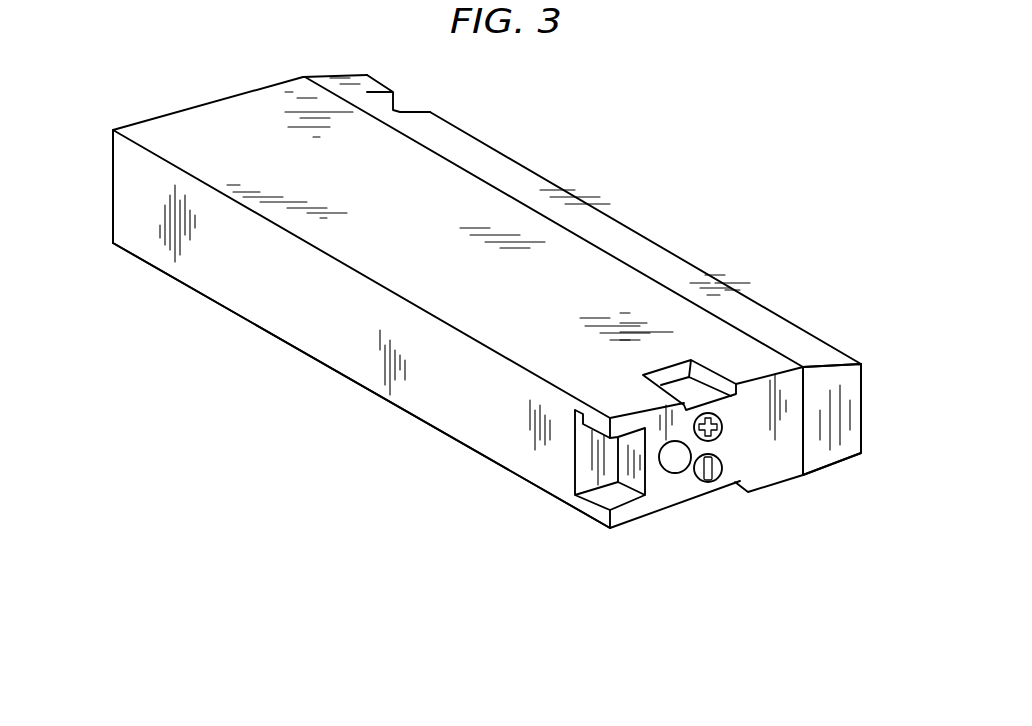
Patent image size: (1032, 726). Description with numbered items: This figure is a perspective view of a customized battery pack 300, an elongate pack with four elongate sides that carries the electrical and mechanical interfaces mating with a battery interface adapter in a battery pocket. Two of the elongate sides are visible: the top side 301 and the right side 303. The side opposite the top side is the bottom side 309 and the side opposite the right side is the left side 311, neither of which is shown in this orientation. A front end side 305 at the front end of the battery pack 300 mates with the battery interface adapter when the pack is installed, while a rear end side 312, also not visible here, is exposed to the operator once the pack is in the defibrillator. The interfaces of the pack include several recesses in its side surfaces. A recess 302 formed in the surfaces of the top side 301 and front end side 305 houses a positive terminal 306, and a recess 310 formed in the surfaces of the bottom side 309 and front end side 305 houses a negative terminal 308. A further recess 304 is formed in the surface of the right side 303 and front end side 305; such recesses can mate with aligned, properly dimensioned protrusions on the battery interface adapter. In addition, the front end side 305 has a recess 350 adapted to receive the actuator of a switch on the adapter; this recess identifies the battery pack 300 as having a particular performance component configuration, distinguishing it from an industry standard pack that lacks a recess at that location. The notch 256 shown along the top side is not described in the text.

The customized battery pack 300 is at (947, 459).
The top side 301 is at (237, 112).
The notch 256 is at (400, 112).
The left side 311 is at (613, 198).
The rear end side 312 is at (87, 221).
The recess 302 is at (680, 367).
The right side 303 is at (323, 345).
The recess 304 is at (592, 466).
The front end side 305 is at (772, 452).
The positive terminal 306 is at (736, 388).
The negative terminal 308 is at (722, 488).
The bottom side 309 is at (388, 433).
The recess 310 is at (692, 524).
The recess 350 is at (674, 470).